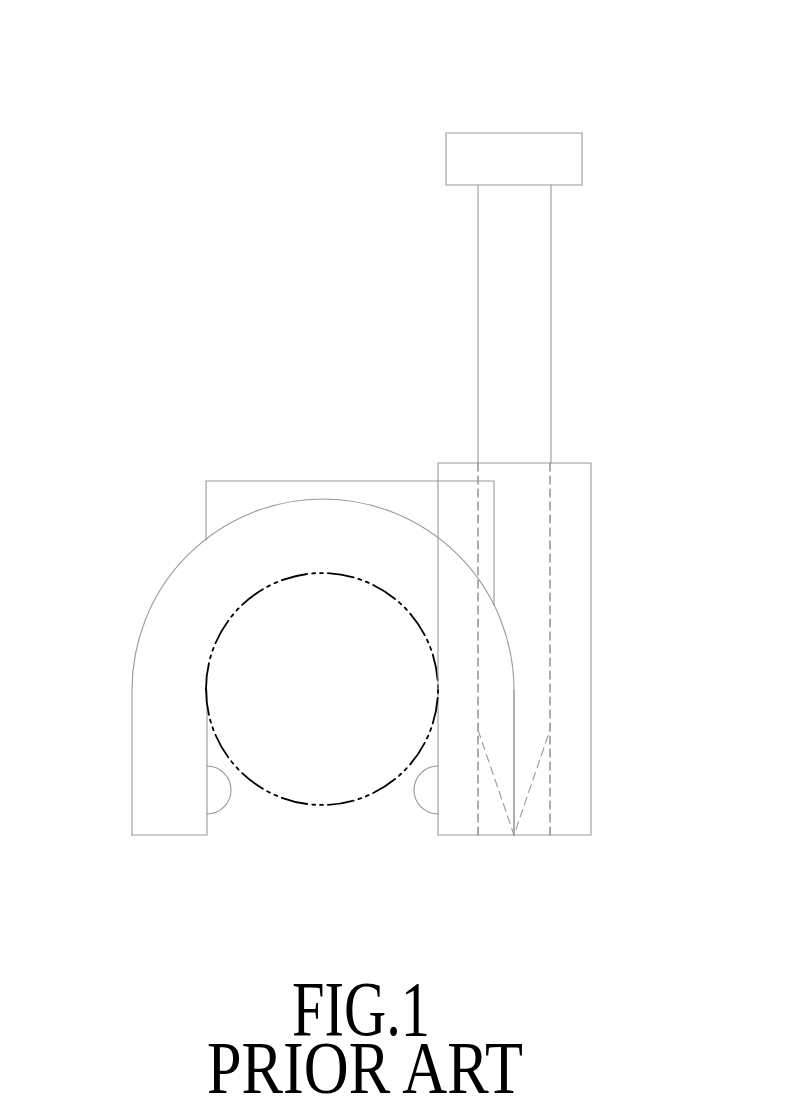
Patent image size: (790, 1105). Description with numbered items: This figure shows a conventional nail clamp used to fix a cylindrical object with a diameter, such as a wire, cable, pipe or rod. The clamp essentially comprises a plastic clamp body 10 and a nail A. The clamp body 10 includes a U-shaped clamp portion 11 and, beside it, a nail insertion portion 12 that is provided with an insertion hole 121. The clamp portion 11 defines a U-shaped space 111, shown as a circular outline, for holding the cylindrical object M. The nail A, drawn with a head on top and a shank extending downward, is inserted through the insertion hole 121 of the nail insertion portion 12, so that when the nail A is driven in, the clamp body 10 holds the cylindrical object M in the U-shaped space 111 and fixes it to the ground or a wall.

The clamp body 10 is at (377, 616).
The U-shaped clamp portion 11 is at (338, 530).
The U-shaped space 111 is at (277, 604).
The nail insertion portion 12 is at (570, 632).
The insertion hole 121 is at (551, 583).
The nail A is at (474, 119).
The cylindrical object M is at (363, 817).